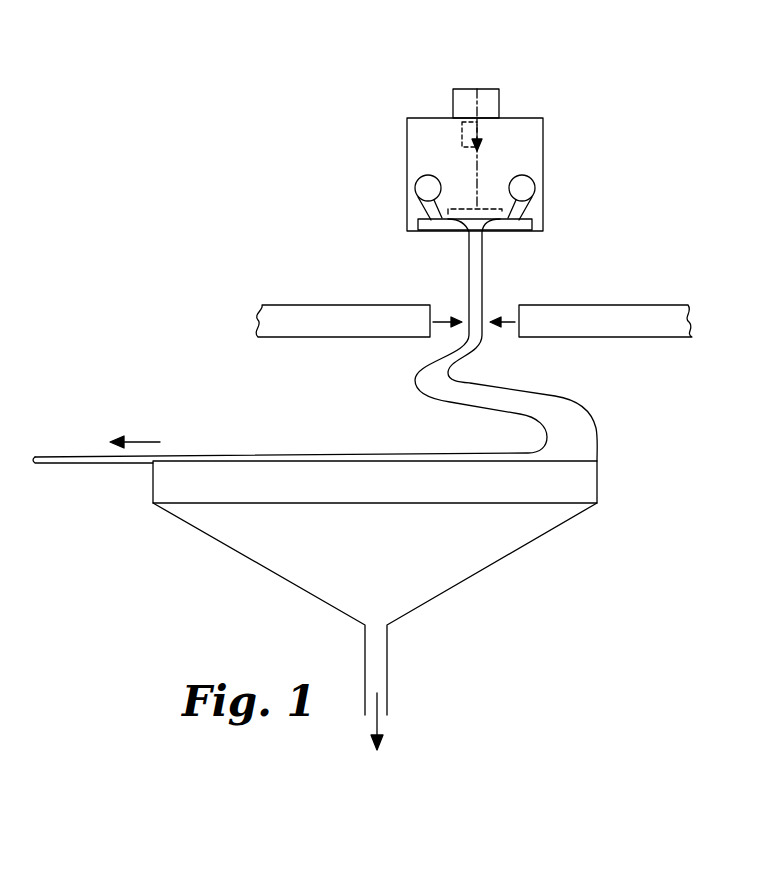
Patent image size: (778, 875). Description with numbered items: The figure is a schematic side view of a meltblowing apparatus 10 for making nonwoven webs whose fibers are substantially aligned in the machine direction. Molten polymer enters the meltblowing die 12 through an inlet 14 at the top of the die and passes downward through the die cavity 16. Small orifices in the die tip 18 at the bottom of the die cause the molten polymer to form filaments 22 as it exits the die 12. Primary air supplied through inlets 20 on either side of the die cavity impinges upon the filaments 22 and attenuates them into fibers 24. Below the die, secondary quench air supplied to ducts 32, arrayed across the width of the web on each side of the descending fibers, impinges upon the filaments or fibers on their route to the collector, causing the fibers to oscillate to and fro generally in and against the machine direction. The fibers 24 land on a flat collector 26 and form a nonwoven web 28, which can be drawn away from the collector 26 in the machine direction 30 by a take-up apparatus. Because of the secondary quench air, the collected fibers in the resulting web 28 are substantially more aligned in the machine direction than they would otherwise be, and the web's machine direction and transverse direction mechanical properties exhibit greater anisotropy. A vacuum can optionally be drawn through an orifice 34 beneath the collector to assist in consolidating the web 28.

The meltblowing apparatus 10 is at (574, 82).
The meltblowing die 12 is at (542, 143).
The inlet 14 is at (477, 90).
The die cavity 16 is at (462, 137).
The die tip 18 is at (480, 230).
The inlets 20 is at (418, 187).
The filaments 22 is at (483, 288).
The fibers 24 is at (580, 403).
The flat collector 26 is at (587, 483).
The nonwoven web 28 is at (398, 455).
The machine direction 30 is at (154, 444).
The ducts 32 is at (347, 305).
The orifice 34 is at (380, 710).